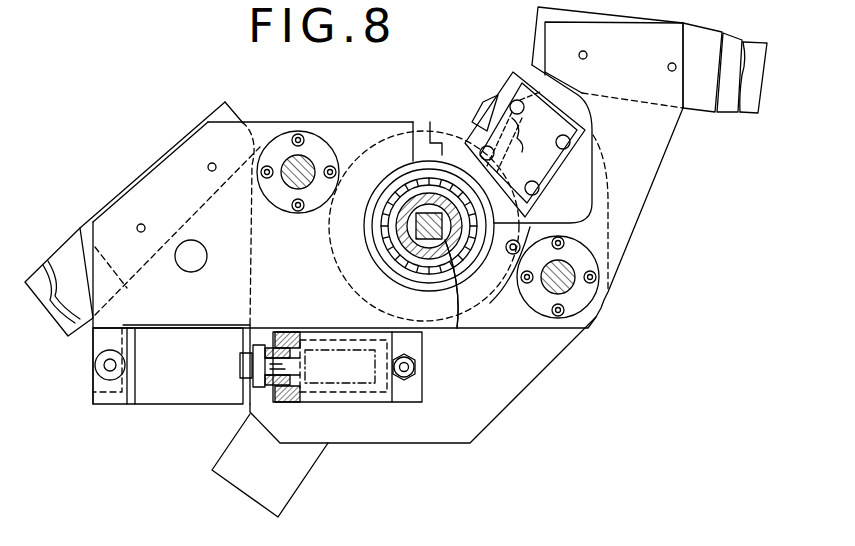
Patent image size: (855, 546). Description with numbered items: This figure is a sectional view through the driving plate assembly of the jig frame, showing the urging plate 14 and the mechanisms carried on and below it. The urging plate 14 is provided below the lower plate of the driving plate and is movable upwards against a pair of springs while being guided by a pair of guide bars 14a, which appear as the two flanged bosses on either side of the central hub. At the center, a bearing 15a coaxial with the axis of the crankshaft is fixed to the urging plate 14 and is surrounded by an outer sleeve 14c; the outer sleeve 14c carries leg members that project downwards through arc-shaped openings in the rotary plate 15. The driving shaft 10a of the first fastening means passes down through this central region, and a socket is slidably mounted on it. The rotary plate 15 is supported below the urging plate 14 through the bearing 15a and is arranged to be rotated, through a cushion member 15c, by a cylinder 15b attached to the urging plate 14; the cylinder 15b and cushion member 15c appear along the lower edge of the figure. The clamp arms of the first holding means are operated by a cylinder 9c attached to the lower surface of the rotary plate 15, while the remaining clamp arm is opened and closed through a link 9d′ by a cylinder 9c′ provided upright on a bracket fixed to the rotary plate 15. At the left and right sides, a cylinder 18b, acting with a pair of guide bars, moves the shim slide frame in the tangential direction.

The cylinder 9c is at (257, 490).
The cylinder 9c′ is at (510, 104).
The link 9d′ is at (477, 118).
The driving shaft 10a is at (454, 330).
The urging plate 14 is at (537, 330).
The guide bars 14a is at (308, 158).
The outer sleeve 14c is at (367, 213).
The rotary plate 15 is at (407, 433).
The bearing 15a is at (440, 238).
The cylinder 15b is at (175, 385).
The cushion member 15c is at (293, 402).
The cylinder 18b is at (68, 252).